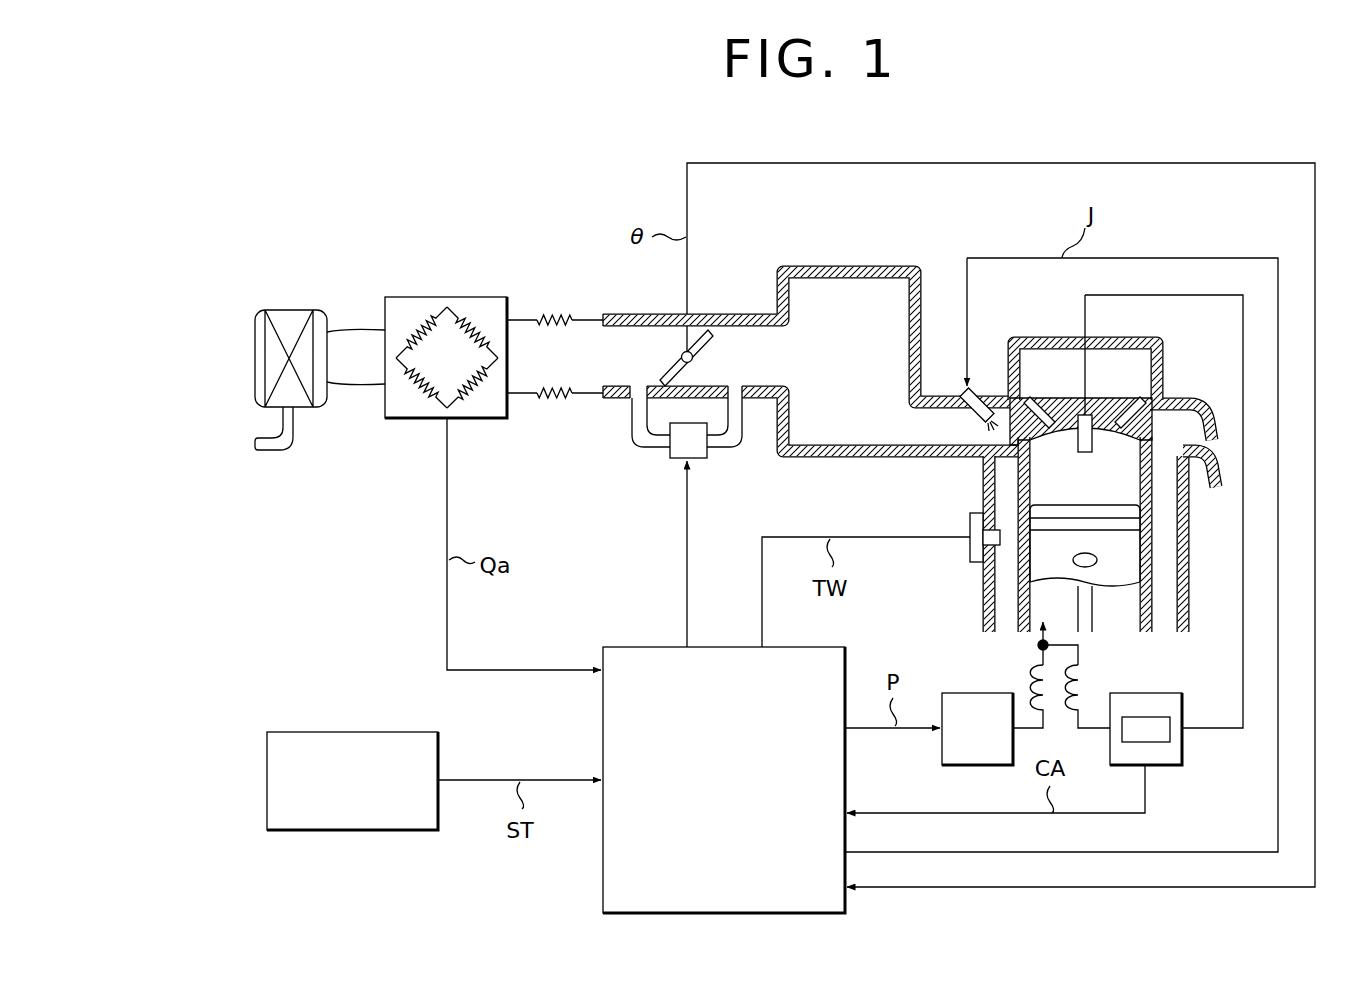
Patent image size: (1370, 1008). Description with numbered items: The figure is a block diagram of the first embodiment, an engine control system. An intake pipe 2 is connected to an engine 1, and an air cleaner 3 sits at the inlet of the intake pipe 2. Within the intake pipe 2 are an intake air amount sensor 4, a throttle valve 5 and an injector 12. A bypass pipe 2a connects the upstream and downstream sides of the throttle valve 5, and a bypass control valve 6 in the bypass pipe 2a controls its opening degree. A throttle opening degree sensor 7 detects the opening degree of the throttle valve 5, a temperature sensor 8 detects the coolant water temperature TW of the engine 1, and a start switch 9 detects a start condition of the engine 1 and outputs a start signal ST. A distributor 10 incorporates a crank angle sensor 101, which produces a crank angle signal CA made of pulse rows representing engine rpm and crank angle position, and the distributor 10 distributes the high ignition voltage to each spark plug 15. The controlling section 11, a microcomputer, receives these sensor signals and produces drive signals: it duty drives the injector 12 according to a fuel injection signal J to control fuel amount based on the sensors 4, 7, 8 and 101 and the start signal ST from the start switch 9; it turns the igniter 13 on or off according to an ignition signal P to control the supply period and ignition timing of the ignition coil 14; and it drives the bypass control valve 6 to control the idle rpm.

The engine 1 is at (983, 490).
The intake pipe 2 is at (552, 314).
The bypass pipe 2a is at (630, 432).
The air cleaner 3 is at (289, 310).
The intake air amount sensor 4 is at (446, 297).
The throttle valve 5 is at (704, 344).
The bypass control valve 6 is at (707, 456).
The throttle opening degree sensor 7 is at (680, 357).
The temperature sensor 8 is at (970, 555).
The start switch 9 is at (352, 732).
The distributor 10 is at (1173, 753).
The crank angle sensor 101 is at (1158, 742).
The controlling section 11 is at (603, 890).
The injector 12 is at (982, 385).
The igniter 13 is at (977, 693).
The ignition coil 14 is at (1090, 667).
The spark plug 15 is at (1100, 410).